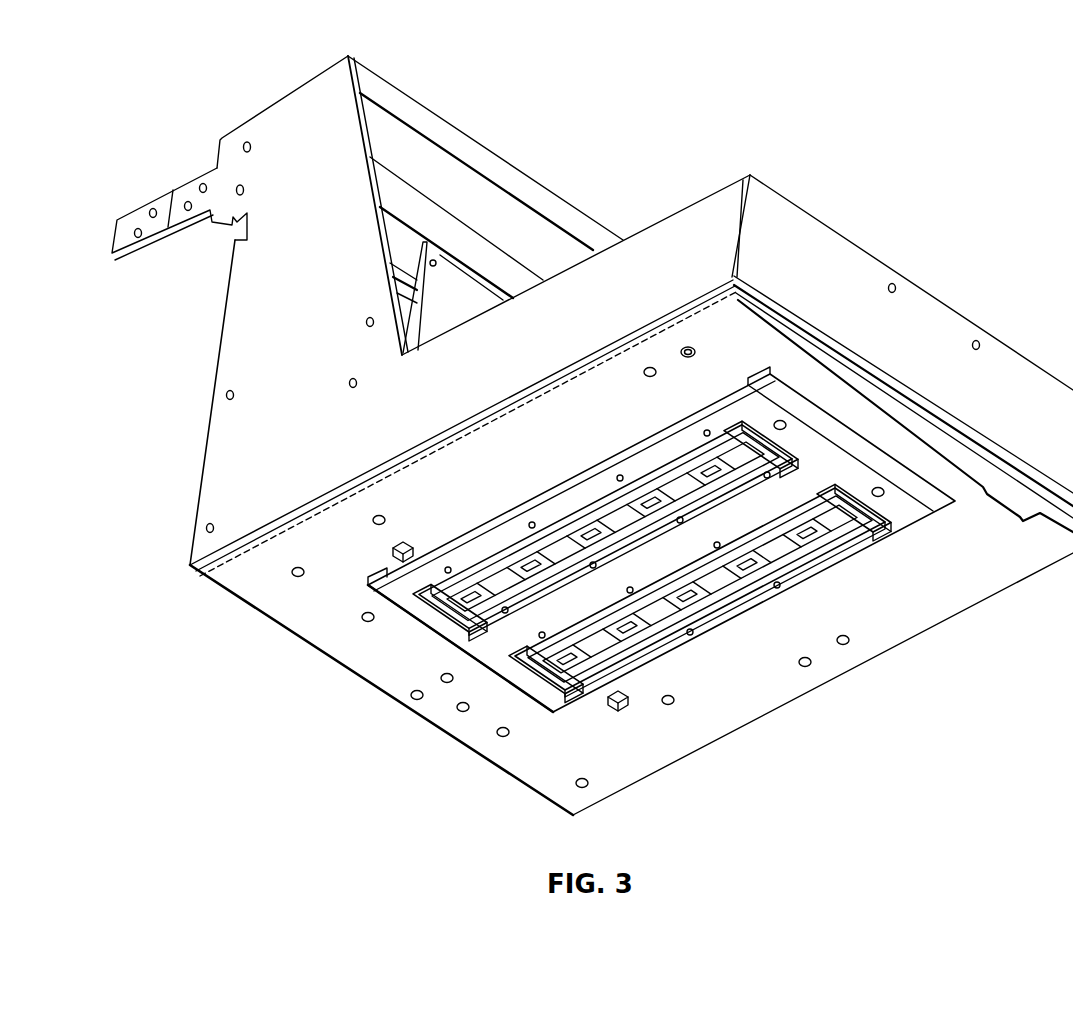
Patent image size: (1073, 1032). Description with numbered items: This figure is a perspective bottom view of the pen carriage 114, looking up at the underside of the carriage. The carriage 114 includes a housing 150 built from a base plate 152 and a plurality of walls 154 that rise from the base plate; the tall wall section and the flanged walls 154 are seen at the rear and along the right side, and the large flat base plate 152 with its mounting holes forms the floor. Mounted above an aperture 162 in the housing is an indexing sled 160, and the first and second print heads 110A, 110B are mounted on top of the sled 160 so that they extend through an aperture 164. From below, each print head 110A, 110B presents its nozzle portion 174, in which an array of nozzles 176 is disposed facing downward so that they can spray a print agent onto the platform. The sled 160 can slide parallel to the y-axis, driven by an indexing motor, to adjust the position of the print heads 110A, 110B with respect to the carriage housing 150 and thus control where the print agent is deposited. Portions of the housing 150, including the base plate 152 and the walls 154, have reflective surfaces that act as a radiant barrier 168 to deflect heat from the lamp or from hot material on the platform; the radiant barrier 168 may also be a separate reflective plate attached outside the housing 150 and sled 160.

The pen carriage 114 is at (250, 310).
The housing 150 is at (228, 427).
The base plate 152 is at (257, 582).
The walls 154 is at (788, 235).
The indexing sled 160 is at (477, 653).
The aperture 162 is at (638, 450).
The aperture 164 is at (605, 493).
The radiant barrier 168 is at (226, 488).
The nozzle portion 174 is at (800, 570).
The nozzles 176 is at (740, 482).
The first print head 110A is at (571, 564).
The second print head 110B is at (676, 652).